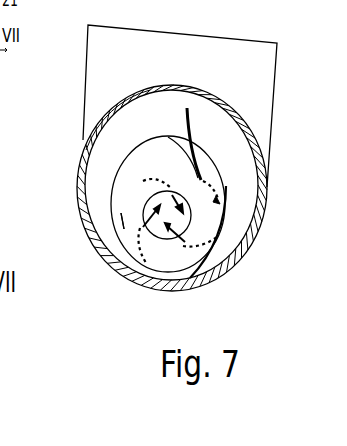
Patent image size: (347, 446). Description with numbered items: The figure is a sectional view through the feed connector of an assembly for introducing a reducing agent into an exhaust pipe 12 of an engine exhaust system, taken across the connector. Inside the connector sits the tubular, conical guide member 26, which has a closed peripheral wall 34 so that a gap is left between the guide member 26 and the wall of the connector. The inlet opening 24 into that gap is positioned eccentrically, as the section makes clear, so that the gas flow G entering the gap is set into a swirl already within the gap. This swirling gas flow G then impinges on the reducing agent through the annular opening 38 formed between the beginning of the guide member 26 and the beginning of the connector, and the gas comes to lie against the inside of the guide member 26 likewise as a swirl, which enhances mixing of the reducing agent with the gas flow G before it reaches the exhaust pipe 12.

The exhaust pipe 12 is at (227, 270).
The inlet opening 24 is at (208, 168).
The gas flow G is at (190, 124).
The annular opening 38 is at (197, 213).
The guide member 26 is at (122, 228).
The closed peripheral wall 34 is at (122, 221).